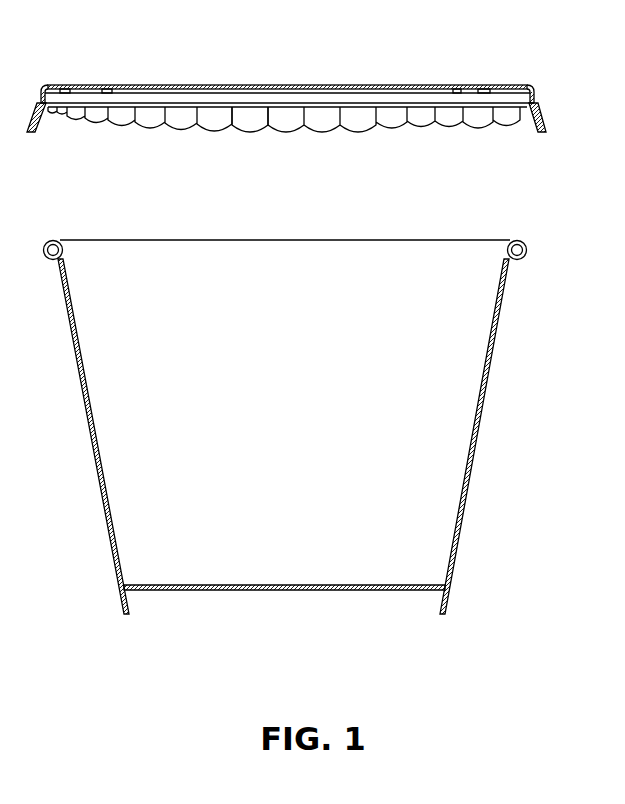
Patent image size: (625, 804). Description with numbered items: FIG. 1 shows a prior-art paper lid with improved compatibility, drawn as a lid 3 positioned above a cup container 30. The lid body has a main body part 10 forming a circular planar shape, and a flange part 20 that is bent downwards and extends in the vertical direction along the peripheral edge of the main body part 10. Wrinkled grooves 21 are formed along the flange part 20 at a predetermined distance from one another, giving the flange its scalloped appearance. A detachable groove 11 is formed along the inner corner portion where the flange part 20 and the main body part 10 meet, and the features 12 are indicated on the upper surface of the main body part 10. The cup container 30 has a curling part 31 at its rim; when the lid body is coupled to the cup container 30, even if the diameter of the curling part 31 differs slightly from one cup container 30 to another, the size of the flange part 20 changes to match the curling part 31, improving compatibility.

The lid 3 is at (310, 89).
The main body part 10 is at (313, 88).
The detachable groove 11 is at (527, 88).
The ribs 12 is at (497, 88).
The flange part 20 is at (216, 118).
The wrinkled grooves 21 is at (262, 118).
The cup container 30 is at (320, 391).
The curling part 31 is at (512, 241).